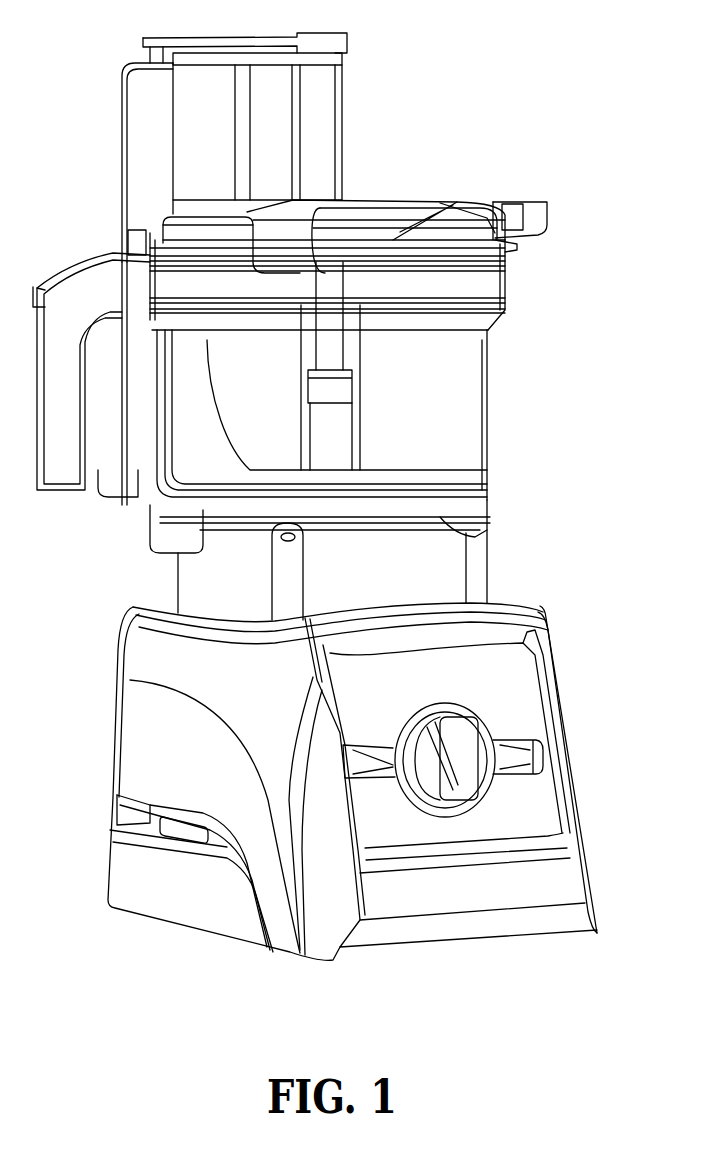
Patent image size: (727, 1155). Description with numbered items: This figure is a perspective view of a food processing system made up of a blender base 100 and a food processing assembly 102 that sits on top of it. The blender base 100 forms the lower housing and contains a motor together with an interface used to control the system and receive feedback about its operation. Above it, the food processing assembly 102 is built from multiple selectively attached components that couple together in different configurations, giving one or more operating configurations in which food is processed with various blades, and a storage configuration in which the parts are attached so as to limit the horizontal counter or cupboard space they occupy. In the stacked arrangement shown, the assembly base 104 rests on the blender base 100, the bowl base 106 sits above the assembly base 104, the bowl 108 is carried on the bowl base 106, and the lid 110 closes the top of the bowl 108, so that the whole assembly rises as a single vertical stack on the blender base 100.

The blender base 100 is at (553, 673).
The food processing assembly 102 is at (127, 123).
The assembly base 104 is at (488, 554).
The bowl base 106 is at (487, 492).
The bowl 108 is at (485, 380).
The lid 110 is at (380, 200).